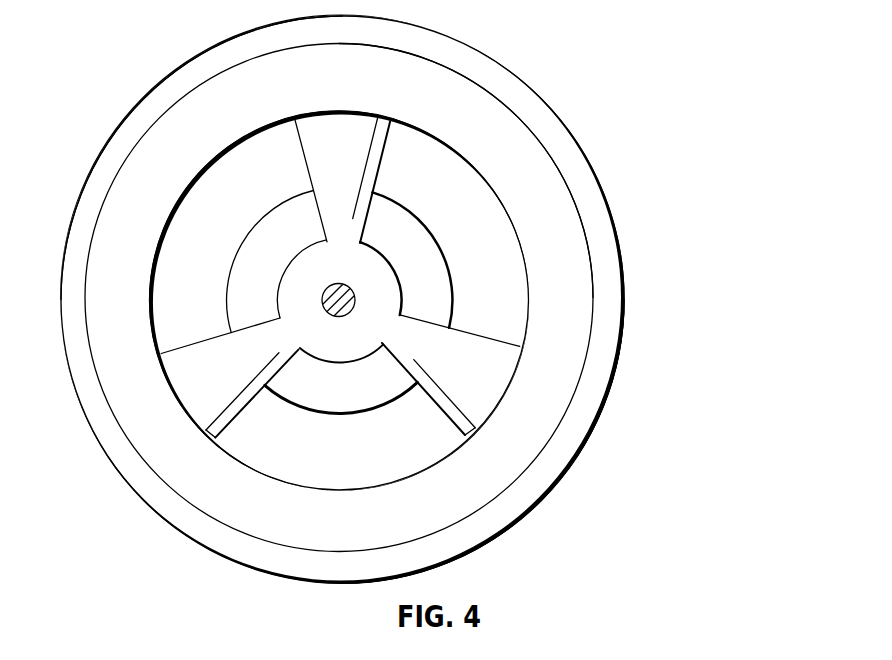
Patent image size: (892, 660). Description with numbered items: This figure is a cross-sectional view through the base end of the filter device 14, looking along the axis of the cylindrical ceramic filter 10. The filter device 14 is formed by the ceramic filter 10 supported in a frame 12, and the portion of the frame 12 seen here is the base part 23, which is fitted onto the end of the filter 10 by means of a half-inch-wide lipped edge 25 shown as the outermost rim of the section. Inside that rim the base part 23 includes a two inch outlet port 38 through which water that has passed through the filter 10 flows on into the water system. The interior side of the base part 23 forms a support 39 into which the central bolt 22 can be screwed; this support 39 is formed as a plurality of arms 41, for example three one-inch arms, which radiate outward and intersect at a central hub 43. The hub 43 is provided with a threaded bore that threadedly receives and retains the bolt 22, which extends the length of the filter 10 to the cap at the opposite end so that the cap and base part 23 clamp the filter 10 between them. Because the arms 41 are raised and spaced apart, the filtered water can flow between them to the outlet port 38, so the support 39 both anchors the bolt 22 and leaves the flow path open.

The ceramic filter 10 is at (538, 177).
The frame 12 is at (622, 337).
The filter device 14 is at (110, 112).
The bolt 22 is at (347, 312).
The base part 23 is at (487, 58).
The lipped edge 25 is at (568, 434).
The outlet port 38 is at (439, 259).
The support 39 is at (303, 143).
The arms 41 is at (357, 150).
The hub 43 is at (328, 350).